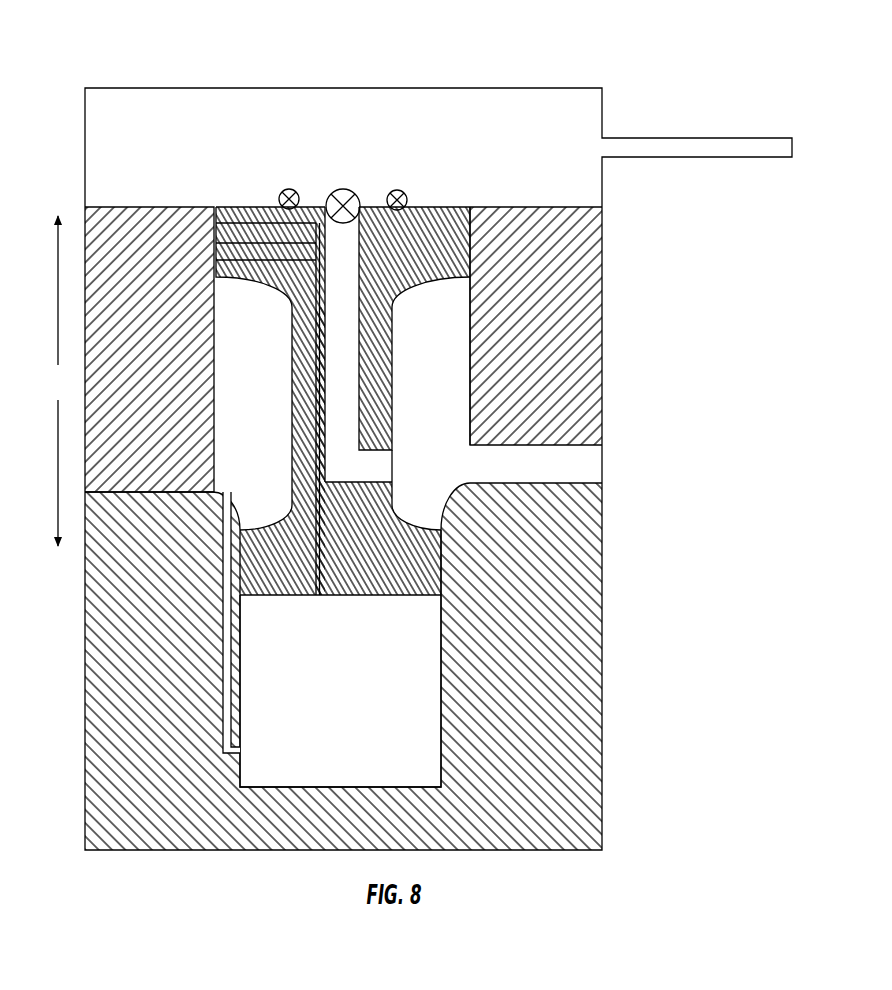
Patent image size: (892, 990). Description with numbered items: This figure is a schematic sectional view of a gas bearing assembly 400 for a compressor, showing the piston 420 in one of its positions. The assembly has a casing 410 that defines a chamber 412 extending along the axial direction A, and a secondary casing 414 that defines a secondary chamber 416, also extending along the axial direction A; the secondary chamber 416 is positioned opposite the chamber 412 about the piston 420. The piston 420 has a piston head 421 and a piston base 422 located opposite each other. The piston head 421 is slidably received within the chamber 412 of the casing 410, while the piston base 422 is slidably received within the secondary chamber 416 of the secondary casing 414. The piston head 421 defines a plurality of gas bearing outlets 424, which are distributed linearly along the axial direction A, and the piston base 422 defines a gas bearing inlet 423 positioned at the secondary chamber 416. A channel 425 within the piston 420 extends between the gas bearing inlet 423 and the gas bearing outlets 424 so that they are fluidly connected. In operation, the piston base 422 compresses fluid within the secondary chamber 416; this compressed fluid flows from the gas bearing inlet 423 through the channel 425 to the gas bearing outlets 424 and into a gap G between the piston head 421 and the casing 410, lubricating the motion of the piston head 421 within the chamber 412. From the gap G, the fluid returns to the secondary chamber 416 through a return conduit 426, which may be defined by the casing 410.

The gas bearing assembly 400 is at (82, 66).
The casing 410 is at (600, 310).
The chamber 412 is at (424, 204).
The secondary casing 414 is at (602, 640).
The secondary chamber 416 is at (333, 766).
The piston 420 is at (386, 388).
The piston head 421 is at (428, 274).
The piston base 422 is at (404, 521).
The gas bearing inlet 423 is at (316, 600).
The gas bearing outlets 424 is at (243, 238).
The channel 425 is at (315, 357).
The return conduit 426 is at (237, 690).
The axial direction A is at (58, 381).
The gap G is at (471, 205).